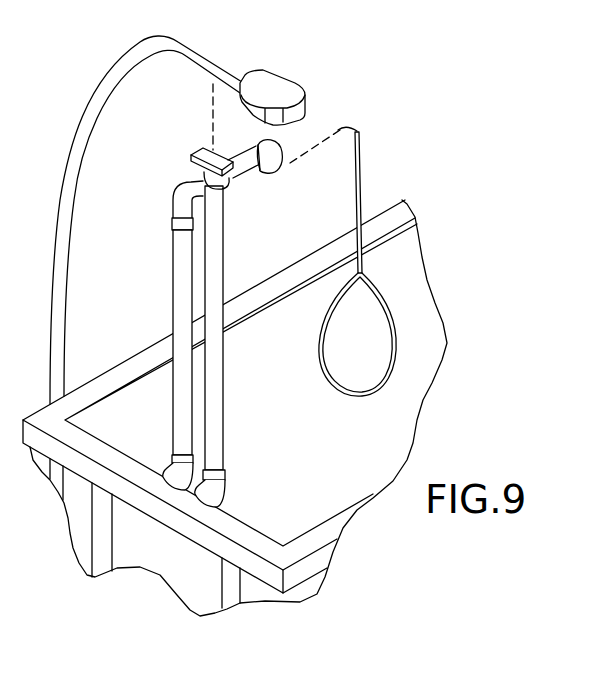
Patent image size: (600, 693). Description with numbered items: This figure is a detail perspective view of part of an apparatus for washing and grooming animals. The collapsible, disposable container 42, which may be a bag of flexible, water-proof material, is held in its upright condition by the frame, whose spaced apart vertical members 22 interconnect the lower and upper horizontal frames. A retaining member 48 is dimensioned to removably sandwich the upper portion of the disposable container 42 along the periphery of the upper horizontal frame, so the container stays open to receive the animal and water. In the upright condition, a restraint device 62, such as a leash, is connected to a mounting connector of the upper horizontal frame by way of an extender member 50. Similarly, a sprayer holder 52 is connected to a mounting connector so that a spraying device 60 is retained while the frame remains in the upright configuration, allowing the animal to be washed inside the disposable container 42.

The vertical member 22 is at (97, 565).
The disposable container 42 is at (148, 403).
The retaining member 48 is at (338, 244).
The extender member 50 is at (181, 290).
The sprayer holder 52 is at (217, 425).
The spraying device 60 is at (213, 64).
The restraint device 62 is at (363, 177).